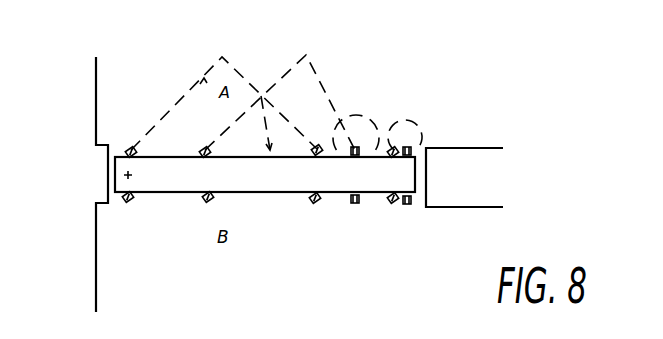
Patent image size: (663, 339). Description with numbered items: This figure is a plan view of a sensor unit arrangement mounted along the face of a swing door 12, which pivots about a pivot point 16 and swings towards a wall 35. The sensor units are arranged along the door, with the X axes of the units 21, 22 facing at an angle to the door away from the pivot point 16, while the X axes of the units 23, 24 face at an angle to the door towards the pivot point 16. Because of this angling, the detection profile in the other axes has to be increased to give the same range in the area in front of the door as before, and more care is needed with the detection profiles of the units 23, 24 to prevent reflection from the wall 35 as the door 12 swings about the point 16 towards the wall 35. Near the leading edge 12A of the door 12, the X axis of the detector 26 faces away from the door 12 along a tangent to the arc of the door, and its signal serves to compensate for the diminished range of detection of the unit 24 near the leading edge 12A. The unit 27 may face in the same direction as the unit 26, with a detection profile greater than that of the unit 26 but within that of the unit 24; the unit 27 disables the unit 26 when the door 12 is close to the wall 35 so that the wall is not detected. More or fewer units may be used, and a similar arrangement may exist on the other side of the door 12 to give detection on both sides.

The swing door 12 is at (287, 183).
The leading edge 12A is at (417, 156).
The pivot point 16 is at (125, 177).
The sensor unit 21 is at (130, 149).
The sensor unit 22 is at (204, 149).
The sensor unit 23 is at (316, 148).
The sensor unit 24 is at (389, 148).
The detector 26 is at (408, 147).
The sensor unit 27 is at (355, 147).
The wall 35 is at (95, 86).